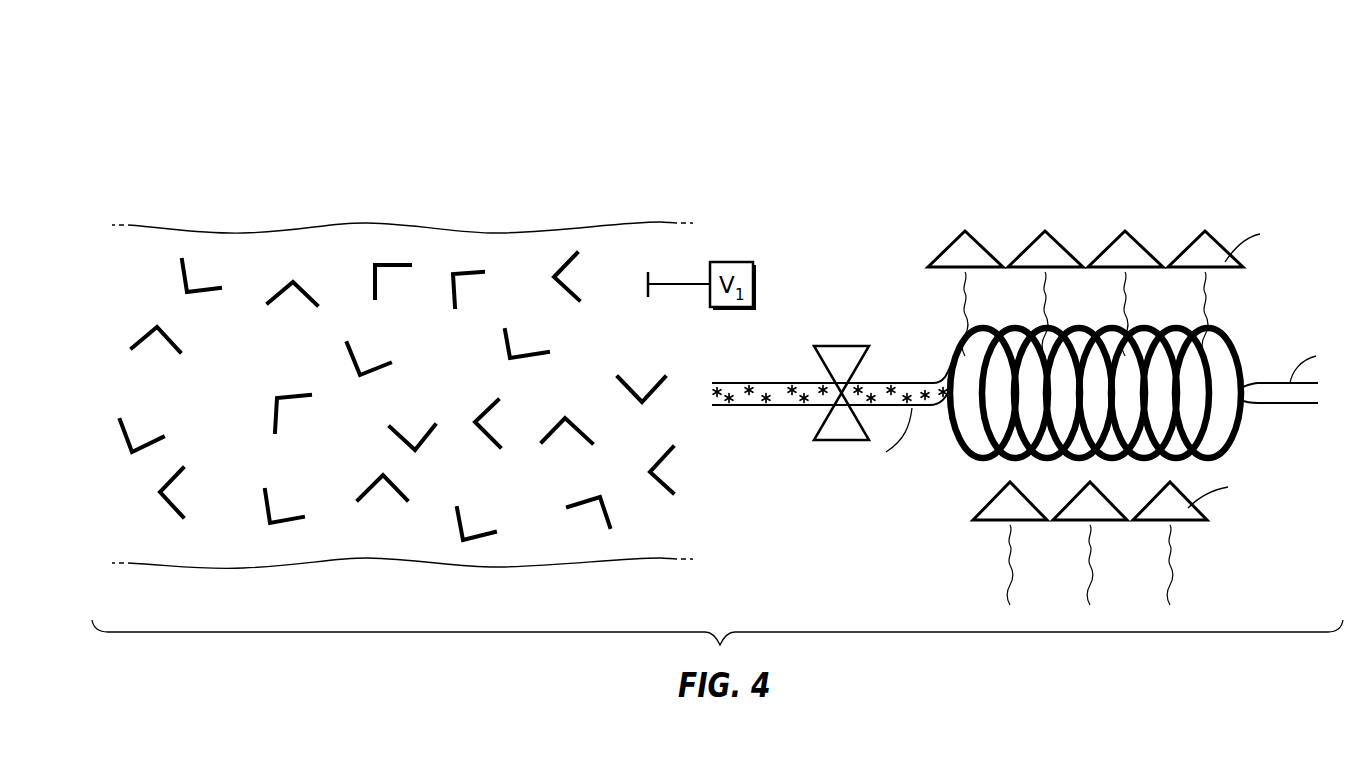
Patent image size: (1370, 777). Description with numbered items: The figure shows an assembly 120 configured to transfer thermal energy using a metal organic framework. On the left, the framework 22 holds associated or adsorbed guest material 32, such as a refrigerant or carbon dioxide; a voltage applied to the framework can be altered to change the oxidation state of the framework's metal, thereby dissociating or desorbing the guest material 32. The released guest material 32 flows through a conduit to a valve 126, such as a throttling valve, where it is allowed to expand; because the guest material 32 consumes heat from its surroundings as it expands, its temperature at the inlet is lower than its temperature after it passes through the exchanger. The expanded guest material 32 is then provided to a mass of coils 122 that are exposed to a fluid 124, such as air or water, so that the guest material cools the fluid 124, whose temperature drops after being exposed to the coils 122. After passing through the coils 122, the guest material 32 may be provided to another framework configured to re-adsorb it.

The assembly 120 is at (1176, 112).
The framework 22 is at (528, 255).
The guest material 32 is at (728, 396).
The valve 126 is at (840, 356).
The coils 122 is at (1202, 436).
The fluid 124 is at (1168, 582).